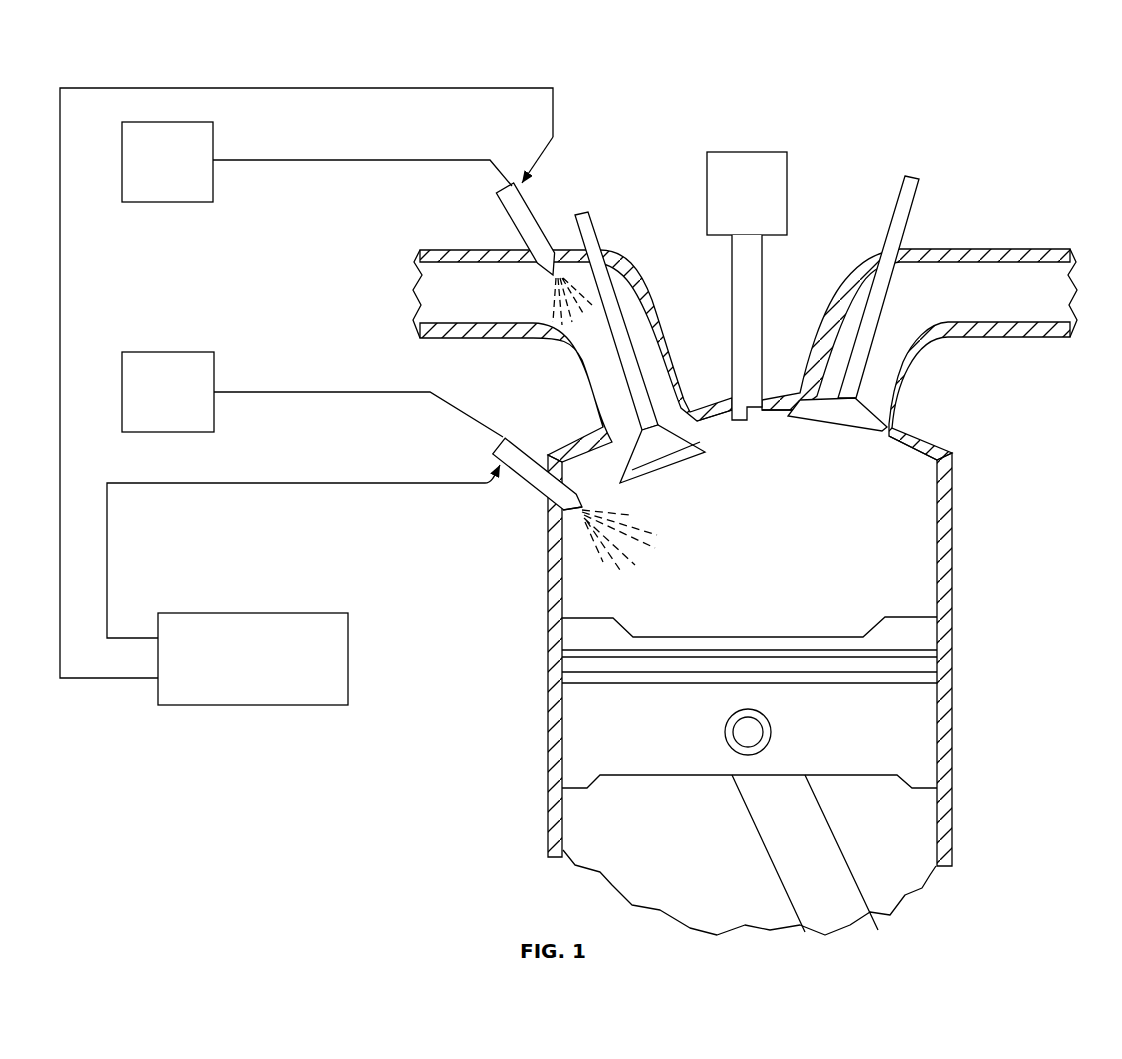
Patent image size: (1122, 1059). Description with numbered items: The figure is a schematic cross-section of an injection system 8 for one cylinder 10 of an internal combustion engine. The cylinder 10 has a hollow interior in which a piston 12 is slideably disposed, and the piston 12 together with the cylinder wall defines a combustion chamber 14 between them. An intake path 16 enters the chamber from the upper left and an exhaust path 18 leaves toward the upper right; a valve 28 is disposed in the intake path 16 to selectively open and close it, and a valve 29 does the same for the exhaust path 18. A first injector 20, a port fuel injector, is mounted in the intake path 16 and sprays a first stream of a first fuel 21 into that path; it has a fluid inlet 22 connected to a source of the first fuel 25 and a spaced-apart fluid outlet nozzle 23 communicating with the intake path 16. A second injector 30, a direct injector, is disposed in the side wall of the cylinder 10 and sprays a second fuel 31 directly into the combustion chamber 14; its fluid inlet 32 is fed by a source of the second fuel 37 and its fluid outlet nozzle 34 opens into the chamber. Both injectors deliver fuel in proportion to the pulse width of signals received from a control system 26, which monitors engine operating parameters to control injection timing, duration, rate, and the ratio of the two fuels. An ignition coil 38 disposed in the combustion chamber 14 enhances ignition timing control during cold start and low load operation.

The injection system 8 is at (1020, 127).
The cylinder 10 is at (953, 587).
The piston 12 is at (912, 724).
The combustion chamber 14 is at (817, 500).
The intake path 16 is at (572, 356).
The exhaust path 18 is at (919, 354).
The first injector 20 is at (527, 213).
The first fuel 21 is at (553, 300).
The fluid inlet 22 is at (508, 185).
The fluid outlet nozzle 23 is at (595, 254).
The source of the first fuel 25 is at (168, 202).
The control system 26 is at (333, 660).
The valve 28 is at (680, 452).
The valve 29 is at (843, 428).
The second injector 30 is at (520, 467).
The second fuel 31 is at (645, 527).
The fluid inlet 32 is at (498, 442).
The fluid outlet nozzle 34 is at (582, 510).
The source of the second fuel 37 is at (200, 375).
The ignition coil 38 is at (750, 160).